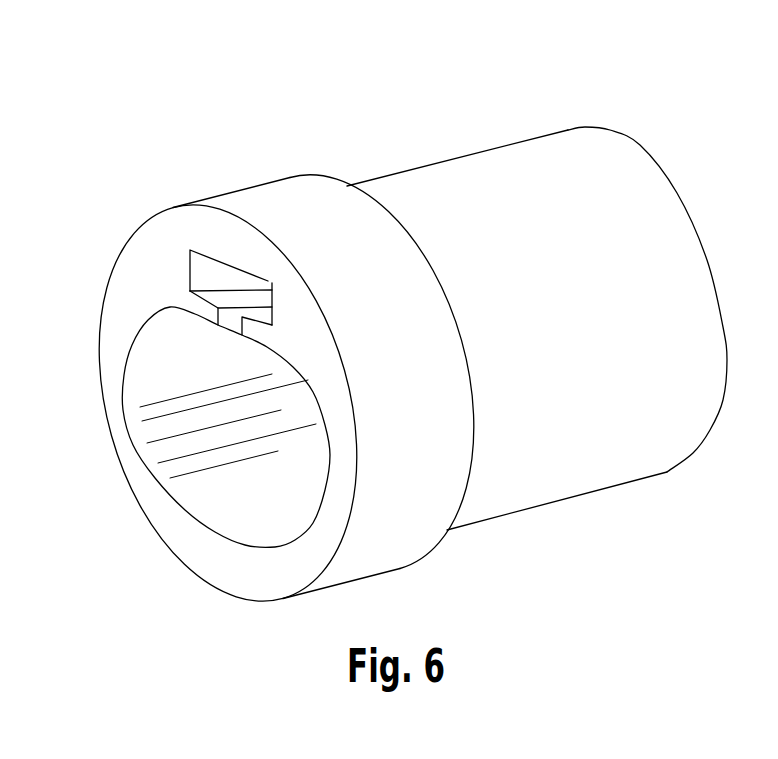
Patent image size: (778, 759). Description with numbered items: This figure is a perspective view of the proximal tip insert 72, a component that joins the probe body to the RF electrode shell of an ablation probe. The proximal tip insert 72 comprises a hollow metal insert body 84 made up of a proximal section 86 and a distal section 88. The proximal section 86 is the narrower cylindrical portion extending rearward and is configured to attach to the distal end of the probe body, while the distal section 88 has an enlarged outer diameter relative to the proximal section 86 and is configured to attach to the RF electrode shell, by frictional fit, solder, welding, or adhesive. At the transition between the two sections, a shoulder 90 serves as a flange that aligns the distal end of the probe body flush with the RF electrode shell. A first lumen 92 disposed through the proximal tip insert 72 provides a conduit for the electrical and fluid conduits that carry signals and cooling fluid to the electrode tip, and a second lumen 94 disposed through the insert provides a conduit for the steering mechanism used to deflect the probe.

The proximal tip insert 72 is at (392, 325).
The insert body 84 is at (542, 163).
The proximal section 86 is at (654, 430).
The distal section 88 is at (281, 210).
The shoulder 90 is at (349, 183).
The first lumen 92 is at (167, 453).
The second lumen 94 is at (202, 275).